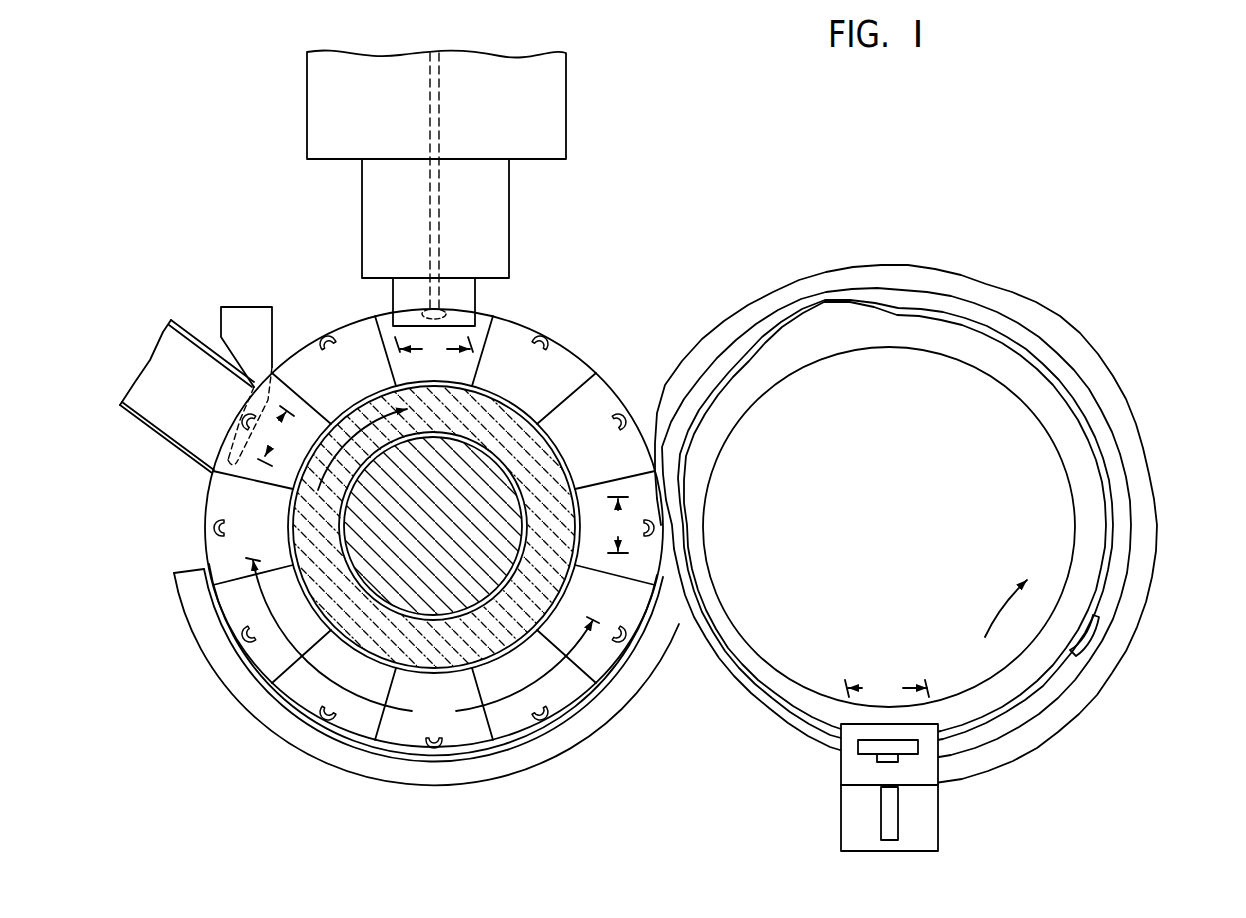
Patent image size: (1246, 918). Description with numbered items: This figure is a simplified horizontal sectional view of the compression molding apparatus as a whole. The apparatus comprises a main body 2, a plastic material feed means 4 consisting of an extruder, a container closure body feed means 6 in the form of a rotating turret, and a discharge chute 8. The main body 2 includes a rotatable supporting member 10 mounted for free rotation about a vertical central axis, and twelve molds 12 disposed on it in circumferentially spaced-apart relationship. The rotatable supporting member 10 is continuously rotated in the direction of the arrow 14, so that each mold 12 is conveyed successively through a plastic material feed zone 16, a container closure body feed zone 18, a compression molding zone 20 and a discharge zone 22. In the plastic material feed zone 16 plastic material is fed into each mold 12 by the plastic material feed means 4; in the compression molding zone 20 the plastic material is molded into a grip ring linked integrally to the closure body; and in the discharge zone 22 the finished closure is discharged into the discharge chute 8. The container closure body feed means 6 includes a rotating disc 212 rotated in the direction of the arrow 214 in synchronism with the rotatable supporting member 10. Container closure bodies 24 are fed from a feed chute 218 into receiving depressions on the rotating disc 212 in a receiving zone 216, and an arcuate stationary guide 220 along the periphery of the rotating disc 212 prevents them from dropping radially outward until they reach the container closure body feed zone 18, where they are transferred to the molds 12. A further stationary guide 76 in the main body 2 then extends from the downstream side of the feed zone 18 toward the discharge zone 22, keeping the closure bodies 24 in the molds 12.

The main body 2 is at (207, 708).
The plastic material feed means 4 is at (523, 224).
The container closure body feed means 6 is at (933, 553).
The discharge chute 8 is at (151, 428).
The rotatable supporting member 10 is at (521, 414).
The molds 12 is at (534, 324).
The arrow 14 is at (362, 432).
The plastic material feed zone 16 is at (434, 349).
The container closure body feed zone 18 is at (619, 525).
The compression molding zone 20 is at (422, 641).
The discharge zone 22 is at (276, 436).
The container closure bodies 24 is at (1080, 647).
The stationary guide 76 is at (553, 757).
The rotating disc 212 is at (863, 539).
The arrow 214 is at (987, 627).
The receiving zone 216 is at (887, 688).
The feed chute 218 is at (840, 763).
The stationary guide 220 is at (1151, 477).